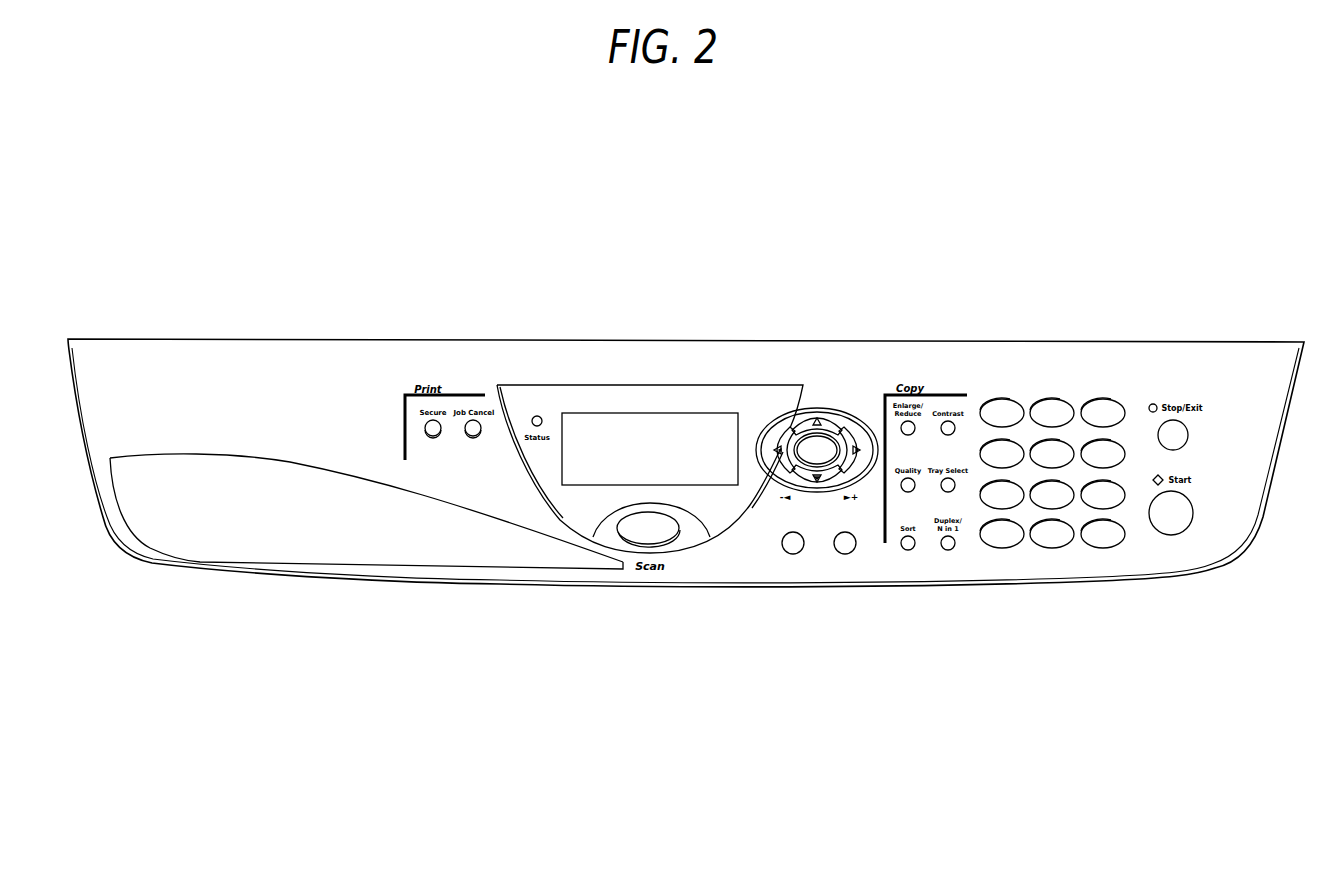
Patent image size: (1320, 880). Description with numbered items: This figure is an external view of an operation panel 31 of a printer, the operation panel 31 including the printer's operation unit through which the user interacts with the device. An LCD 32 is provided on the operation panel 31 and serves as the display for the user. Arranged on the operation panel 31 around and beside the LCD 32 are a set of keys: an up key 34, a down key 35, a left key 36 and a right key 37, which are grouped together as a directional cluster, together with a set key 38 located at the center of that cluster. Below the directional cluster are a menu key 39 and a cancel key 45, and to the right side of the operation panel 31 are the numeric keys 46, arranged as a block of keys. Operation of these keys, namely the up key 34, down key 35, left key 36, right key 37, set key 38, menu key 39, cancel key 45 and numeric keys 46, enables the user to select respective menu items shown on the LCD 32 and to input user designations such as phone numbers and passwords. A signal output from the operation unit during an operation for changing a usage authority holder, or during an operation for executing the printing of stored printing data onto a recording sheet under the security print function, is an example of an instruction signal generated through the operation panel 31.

The operation panel 31 is at (724, 350).
The LCD 32 is at (610, 445).
The up key 34 is at (837, 417).
The down key 35 is at (825, 477).
The left key 36 is at (777, 460).
The right key 37 is at (862, 458).
The set key 38 is at (815, 440).
The menu key 39 is at (845, 546).
The cancel key 45 is at (793, 546).
The numeric keys 46 is at (1127, 557).